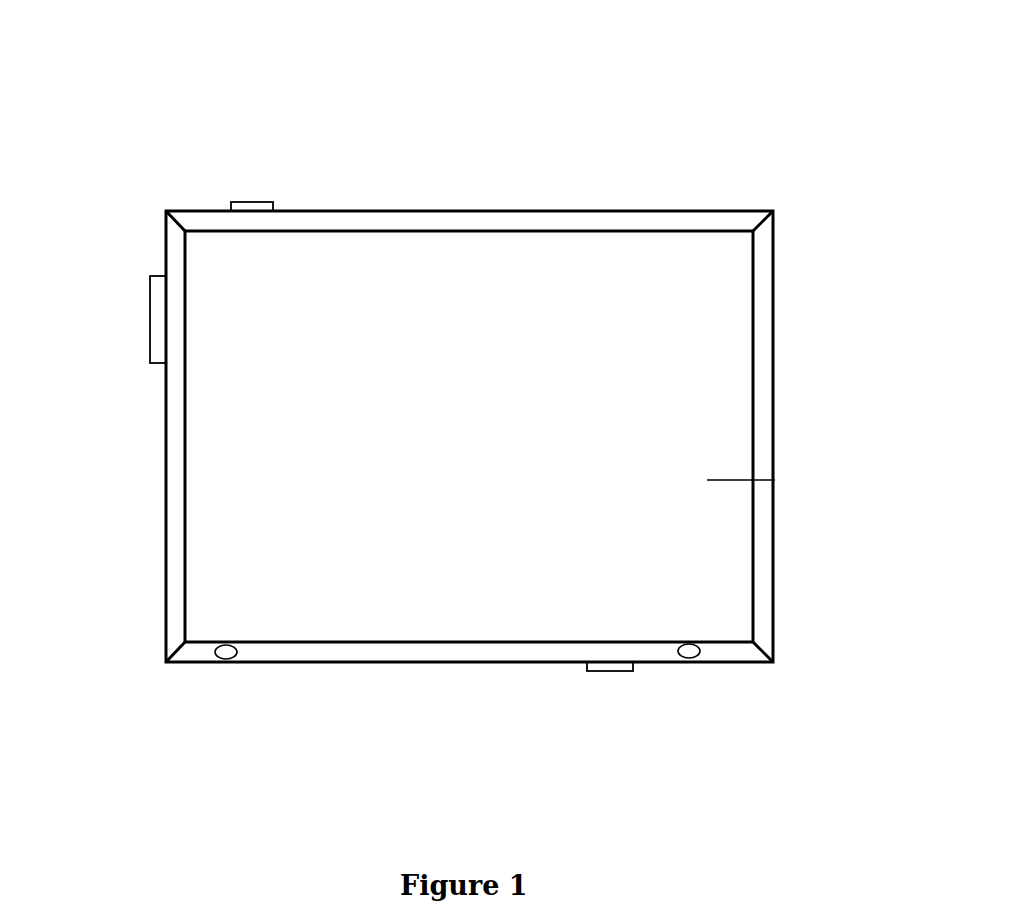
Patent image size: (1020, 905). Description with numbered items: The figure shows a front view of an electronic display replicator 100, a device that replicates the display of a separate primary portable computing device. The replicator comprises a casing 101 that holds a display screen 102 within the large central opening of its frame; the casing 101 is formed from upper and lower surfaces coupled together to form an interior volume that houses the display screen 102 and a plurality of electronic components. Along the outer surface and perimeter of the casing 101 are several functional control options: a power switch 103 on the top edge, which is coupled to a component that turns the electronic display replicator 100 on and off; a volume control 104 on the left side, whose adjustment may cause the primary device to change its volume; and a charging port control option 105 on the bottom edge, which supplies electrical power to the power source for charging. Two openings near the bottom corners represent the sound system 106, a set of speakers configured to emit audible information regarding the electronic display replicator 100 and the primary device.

The electronic display replicator 100 is at (596, 175).
The casing 101 is at (764, 326).
The display screen 102 is at (775, 480).
The power switch 103 is at (254, 205).
The volume control 104 is at (155, 312).
The charging port control option 105 is at (605, 672).
The sound system 106 is at (213, 660).